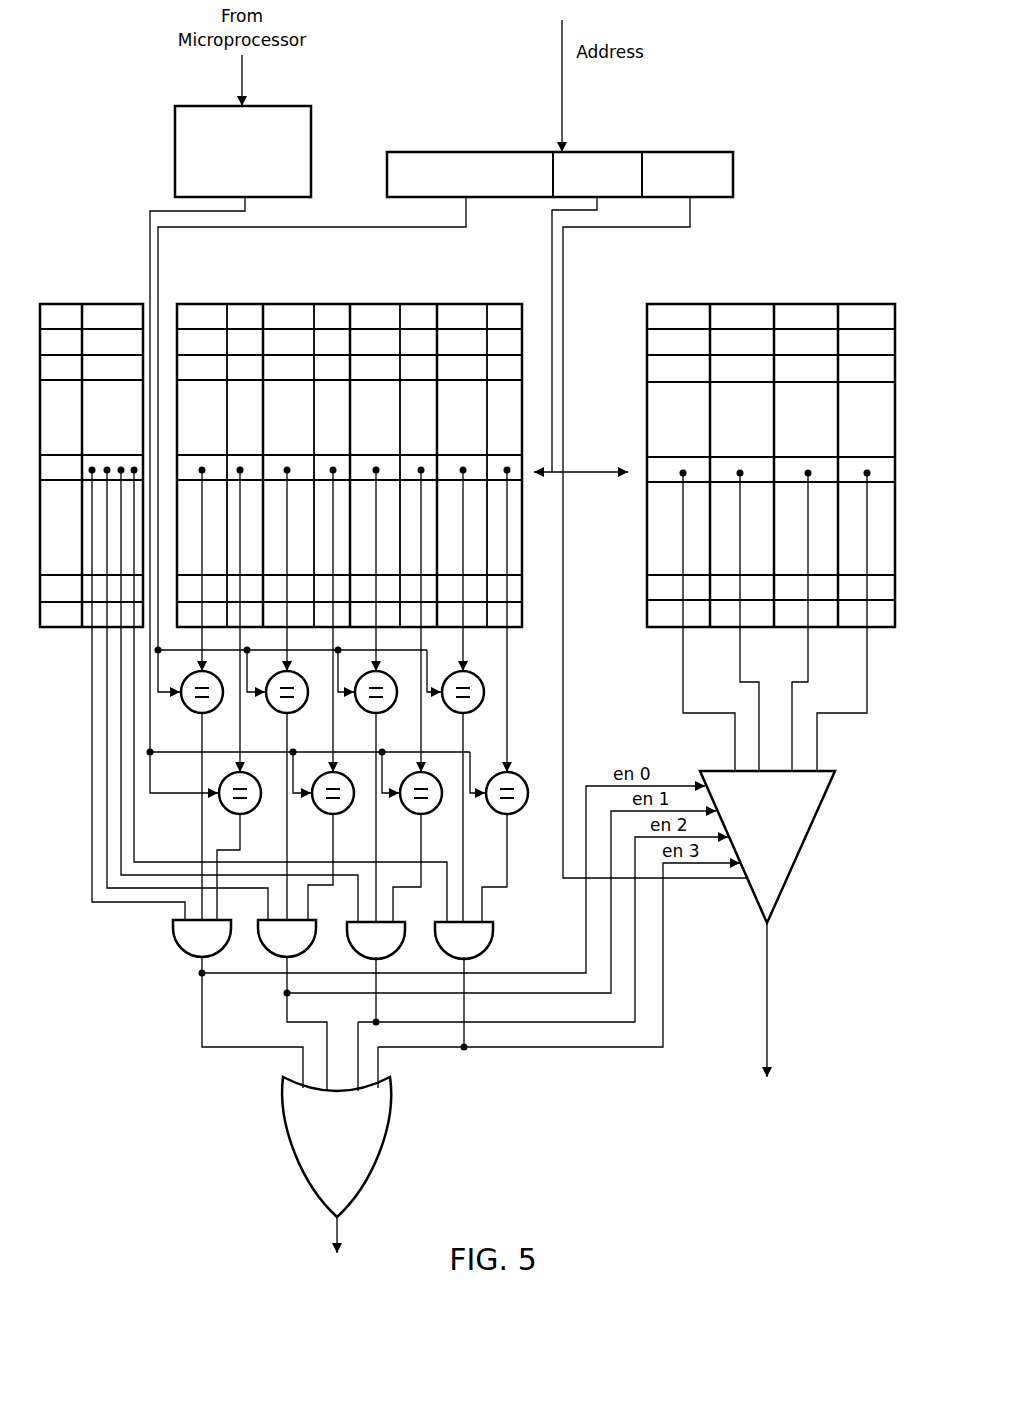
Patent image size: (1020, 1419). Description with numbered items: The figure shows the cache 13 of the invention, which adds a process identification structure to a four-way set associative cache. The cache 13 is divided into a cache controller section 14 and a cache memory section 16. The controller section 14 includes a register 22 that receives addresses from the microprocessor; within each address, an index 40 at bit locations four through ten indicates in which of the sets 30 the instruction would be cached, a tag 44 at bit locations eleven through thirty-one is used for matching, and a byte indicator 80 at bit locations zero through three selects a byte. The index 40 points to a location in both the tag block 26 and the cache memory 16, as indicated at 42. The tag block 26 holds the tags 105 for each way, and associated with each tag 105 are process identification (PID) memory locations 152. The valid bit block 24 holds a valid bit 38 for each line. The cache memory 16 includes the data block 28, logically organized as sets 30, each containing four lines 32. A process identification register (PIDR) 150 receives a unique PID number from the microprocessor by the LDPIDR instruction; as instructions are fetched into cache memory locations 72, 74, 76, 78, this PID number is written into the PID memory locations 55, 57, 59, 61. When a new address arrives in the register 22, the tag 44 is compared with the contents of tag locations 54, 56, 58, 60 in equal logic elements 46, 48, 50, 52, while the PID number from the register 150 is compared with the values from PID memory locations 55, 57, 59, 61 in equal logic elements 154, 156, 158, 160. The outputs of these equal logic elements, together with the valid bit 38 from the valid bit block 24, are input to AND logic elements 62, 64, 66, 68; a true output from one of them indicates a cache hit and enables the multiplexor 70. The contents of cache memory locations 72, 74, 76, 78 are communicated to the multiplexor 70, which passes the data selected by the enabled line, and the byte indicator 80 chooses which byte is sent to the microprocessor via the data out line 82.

The process identification register (PIDR) 150 is at (311, 120).
The cache controller section 14 is at (154, 194).
The 32-bit register 22 is at (733, 175).
The tag 44 is at (473, 153).
The index 40 is at (598, 153).
The byte indicator 80 is at (675, 153).
The index pointer 42 is at (556, 468).
The cache memory section 16 is at (863, 197).
The valid bit block 24 is at (118, 302).
The valid bit 38 is at (141, 452).
The tag block 26 is at (343, 258).
The tags 105 is at (220, 336).
The process identification (PID) memory locations 152 is at (253, 331).
The tag location 54 is at (182, 458).
The PID memory location 55 is at (246, 459).
The tag location 56 is at (268, 458).
The PID memory location 57 is at (333, 459).
The tag location 58 is at (355, 458).
The PID memory location 59 is at (420, 459).
The tag location 60 is at (442, 458).
The PID memory location 61 is at (507, 459).
The equal logic element 46 is at (217, 708).
The equal logic element 48 is at (302, 708).
The equal logic element 50 is at (391, 708).
The equal logic element 52 is at (478, 708).
The equal logic element 154 is at (255, 809).
The equal logic element 156 is at (348, 809).
The equal logic element 158 is at (436, 809).
The equal logic element 160 is at (522, 809).
The AND logic element 62 is at (439, 937).
The AND logic element 64 is at (487, 951).
The AND logic element 66 is at (537, 964).
The AND logic element 68 is at (559, 975).
The multiplexor 70 is at (767, 847).
The data out line 82 is at (768, 1018).
The data block 28 is at (778, 243).
The sets 30 is at (604, 292).
The lines 32 is at (855, 627).
The cache memory location 72 is at (703, 457).
The cache memory location 74 is at (761, 457).
The cache memory location 76 is at (826, 457).
The cache memory location 78 is at (886, 457).
The cache 13 is at (641, 1142).